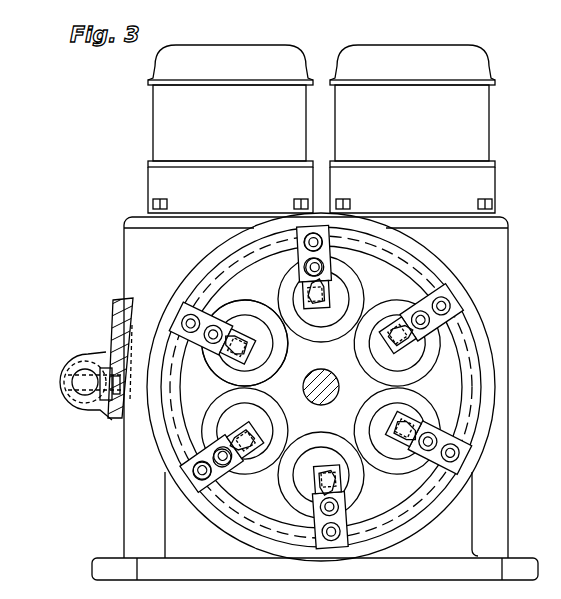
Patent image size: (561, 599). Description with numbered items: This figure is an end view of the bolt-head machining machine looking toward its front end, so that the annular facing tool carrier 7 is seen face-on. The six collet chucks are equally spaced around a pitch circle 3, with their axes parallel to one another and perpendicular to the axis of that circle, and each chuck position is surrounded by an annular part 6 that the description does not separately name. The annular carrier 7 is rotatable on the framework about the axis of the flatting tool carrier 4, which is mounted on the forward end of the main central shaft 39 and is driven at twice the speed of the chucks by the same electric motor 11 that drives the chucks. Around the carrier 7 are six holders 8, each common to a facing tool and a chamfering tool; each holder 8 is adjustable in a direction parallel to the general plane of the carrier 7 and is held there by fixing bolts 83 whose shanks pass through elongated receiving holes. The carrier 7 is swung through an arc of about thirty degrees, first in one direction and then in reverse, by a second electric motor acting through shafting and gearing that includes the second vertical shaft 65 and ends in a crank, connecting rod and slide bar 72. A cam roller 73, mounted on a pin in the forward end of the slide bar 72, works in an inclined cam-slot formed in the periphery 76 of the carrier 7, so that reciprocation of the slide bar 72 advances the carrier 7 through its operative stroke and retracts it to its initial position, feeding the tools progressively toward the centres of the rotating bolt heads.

The pitch circle 3 is at (272, 311).
The flatting tool carrier 4 is at (403, 529).
The bearing bushings 6 is at (318, 328).
The annular carrier 7 is at (88, 136).
The holder 8 is at (446, 294).
The electric motor 11 is at (261, 56).
The main central shaft 39 is at (336, 388).
The second vertical shaft 65 is at (454, 62).
The slide bar 72 is at (88, 386).
The cam roller 73 is at (108, 402).
The periphery 76 is at (114, 311).
The fixing bolts 83 is at (319, 292).